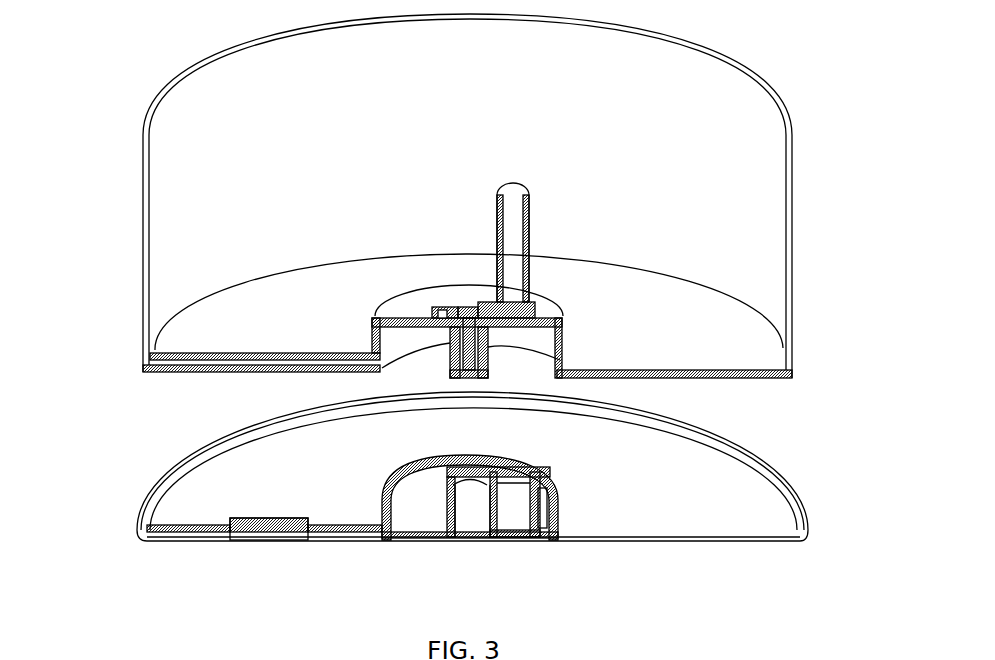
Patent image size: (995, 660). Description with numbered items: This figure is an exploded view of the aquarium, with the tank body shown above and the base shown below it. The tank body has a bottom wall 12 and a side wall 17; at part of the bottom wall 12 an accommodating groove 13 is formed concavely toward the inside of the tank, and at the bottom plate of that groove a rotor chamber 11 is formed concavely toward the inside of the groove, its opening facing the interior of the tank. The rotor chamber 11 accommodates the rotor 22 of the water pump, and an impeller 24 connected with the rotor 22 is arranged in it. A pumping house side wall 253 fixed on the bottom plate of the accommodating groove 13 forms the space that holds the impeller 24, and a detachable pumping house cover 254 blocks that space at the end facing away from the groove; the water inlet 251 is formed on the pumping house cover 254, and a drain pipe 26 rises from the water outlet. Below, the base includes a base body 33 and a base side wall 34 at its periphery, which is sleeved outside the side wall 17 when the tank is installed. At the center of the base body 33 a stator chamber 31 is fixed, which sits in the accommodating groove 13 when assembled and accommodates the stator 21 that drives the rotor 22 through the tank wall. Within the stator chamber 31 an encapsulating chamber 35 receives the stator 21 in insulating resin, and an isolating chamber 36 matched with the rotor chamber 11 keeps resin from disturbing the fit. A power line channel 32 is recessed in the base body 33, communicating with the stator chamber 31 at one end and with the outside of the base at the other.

The rotor chamber 11 is at (457, 368).
The bottom wall 12 is at (790, 374).
The accommodating groove 13 is at (523, 367).
The side wall 17 is at (765, 268).
The stator 21 is at (518, 505).
The rotor 22 is at (450, 338).
The impeller 24 is at (447, 305).
The drain pipe 26 is at (515, 188).
The water inlet 251 is at (480, 303).
The pumping house side wall 253 is at (540, 302).
The pumping house cover 254 is at (435, 305).
The stator chamber 31 is at (400, 490).
The power line channel 32 is at (205, 533).
The base body 33 is at (256, 500).
The base side wall 34 is at (167, 497).
The encapsulating chamber 35 is at (478, 472).
The isolating chamber 36 is at (473, 513).